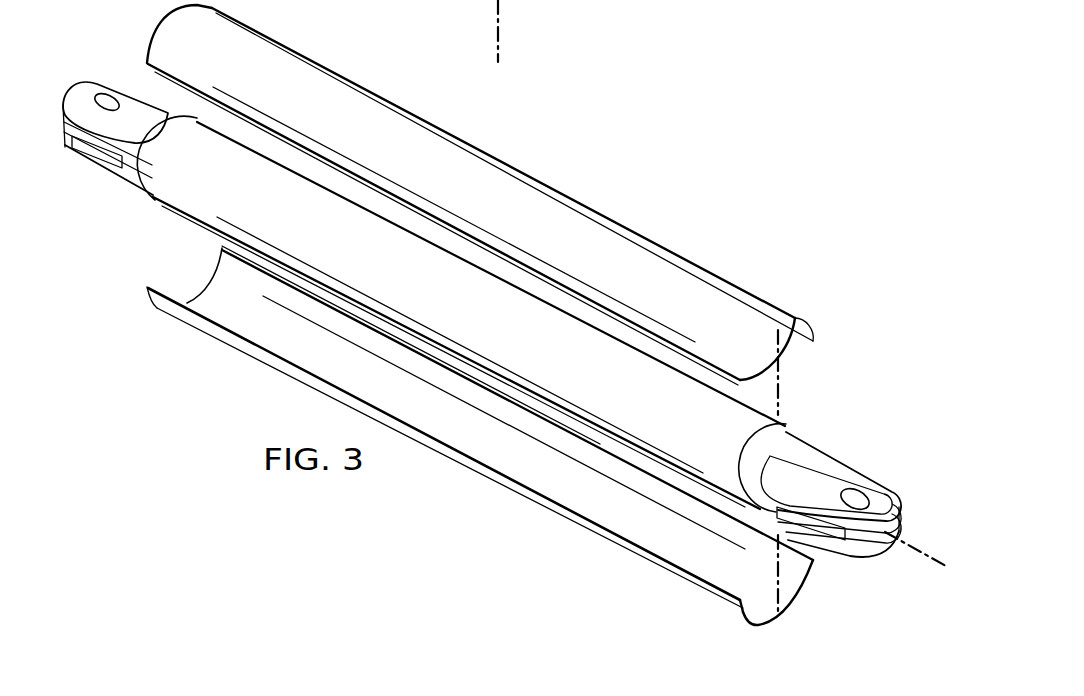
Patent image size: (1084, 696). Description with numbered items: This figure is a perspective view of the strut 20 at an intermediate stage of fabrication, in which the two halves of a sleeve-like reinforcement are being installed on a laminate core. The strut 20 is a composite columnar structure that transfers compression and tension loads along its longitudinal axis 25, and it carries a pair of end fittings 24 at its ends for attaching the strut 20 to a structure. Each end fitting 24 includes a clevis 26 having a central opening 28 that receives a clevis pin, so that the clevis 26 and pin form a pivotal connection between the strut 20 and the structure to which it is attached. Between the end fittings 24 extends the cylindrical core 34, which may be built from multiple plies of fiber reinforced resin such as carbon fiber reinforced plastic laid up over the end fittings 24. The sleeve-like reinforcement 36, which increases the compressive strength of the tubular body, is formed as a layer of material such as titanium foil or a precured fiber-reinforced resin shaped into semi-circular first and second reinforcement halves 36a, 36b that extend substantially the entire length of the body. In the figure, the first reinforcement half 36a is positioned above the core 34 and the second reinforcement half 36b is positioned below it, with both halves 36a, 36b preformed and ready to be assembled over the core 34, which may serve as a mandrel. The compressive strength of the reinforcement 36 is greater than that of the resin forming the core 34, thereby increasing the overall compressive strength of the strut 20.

The strut 20 is at (504, 312).
The end fitting 24 is at (110, 183).
The longitudinal axis 25 is at (915, 553).
The clevis 26 is at (95, 88).
The central opening 28 is at (108, 96).
The core 34 is at (493, 331).
The sleeve-like reinforcement 36 is at (480, 315).
The first reinforcement half 36a is at (652, 250).
The second reinforcement half 36b is at (544, 507).